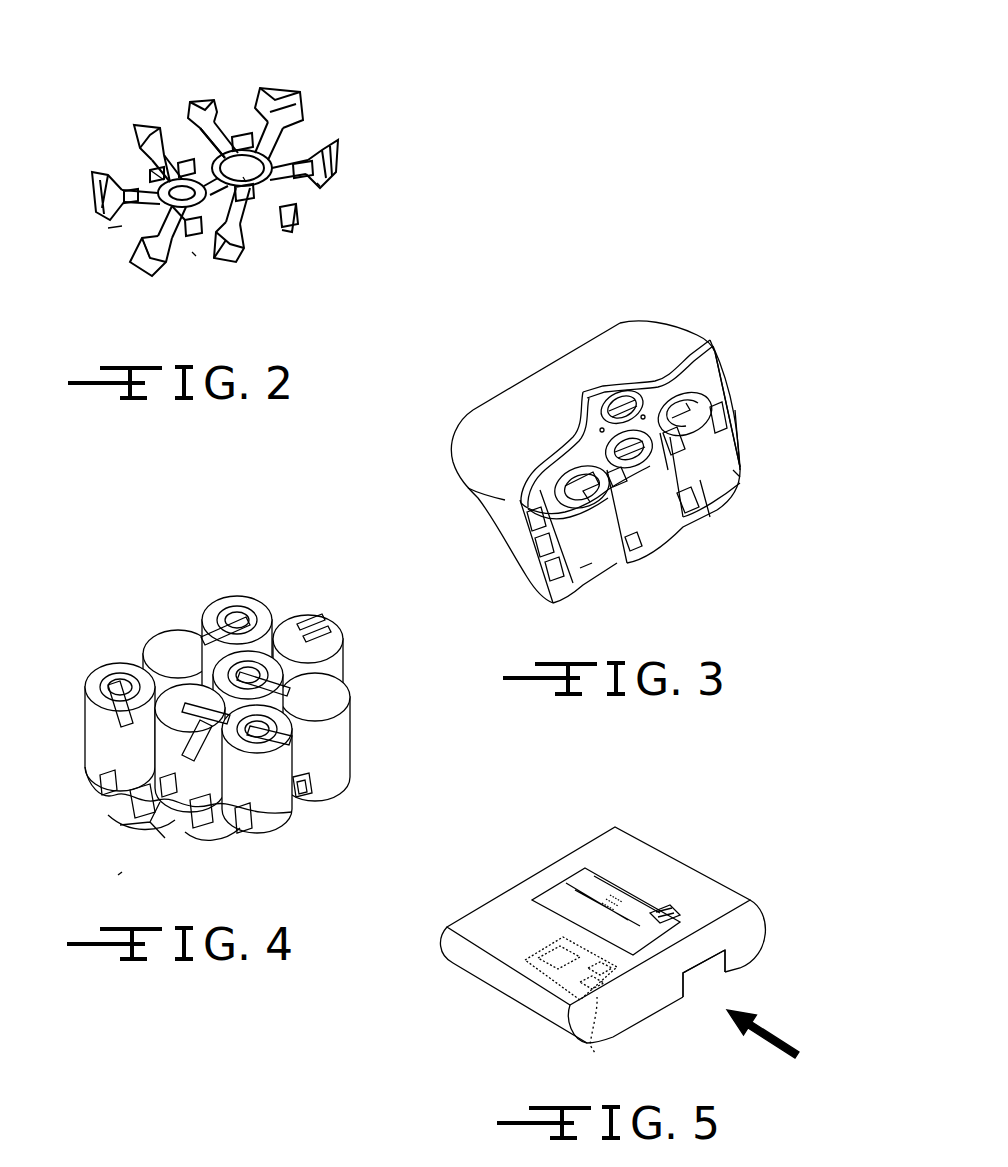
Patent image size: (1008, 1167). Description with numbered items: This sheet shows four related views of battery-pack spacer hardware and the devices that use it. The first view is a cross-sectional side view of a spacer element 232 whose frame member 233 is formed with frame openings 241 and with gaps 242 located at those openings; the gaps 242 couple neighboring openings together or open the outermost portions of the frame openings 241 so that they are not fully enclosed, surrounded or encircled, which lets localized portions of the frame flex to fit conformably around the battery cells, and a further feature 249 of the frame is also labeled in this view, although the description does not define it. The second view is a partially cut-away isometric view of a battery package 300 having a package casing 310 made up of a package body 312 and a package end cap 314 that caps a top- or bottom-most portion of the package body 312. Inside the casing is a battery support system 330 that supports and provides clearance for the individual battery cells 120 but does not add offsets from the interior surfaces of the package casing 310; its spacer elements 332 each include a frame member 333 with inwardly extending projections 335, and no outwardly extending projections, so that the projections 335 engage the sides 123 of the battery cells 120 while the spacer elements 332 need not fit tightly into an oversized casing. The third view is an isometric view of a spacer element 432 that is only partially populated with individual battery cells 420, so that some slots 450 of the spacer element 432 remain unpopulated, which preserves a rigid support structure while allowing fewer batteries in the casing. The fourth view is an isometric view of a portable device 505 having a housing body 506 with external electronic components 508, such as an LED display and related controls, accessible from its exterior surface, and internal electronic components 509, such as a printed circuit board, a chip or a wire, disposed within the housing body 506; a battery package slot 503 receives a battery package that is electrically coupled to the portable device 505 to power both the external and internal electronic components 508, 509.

In FIG. 2, the spacer element 232 is at (140, 96).
In FIG. 2, the gaps 242 is at (150, 185).
In FIG. 2, the frame openings 241 is at (122, 227).
In FIG. 2, the central aperture 249 is at (243, 177).
In FIG. 2, the frame member 233 is at (317, 183).
In FIG. 3, the battery package 300 is at (514, 360).
In FIG. 3, the package end cap 314 is at (620, 363).
In FIG. 3, the battery support system 330 is at (707, 353).
In FIG. 3, the spacer elements 332 is at (731, 372).
In FIG. 3, the sides 123 is at (720, 420).
In FIG. 3, the projections 335 is at (582, 444).
In FIG. 3, the package casing 310 is at (445, 503).
In FIG. 3, the frame member 333 is at (520, 500).
In FIG. 3, the package body 312 is at (490, 533).
In FIG. 3, the battery cells 120 is at (660, 505).
In FIG. 4, the battery cells 420 is at (265, 797).
In FIG. 4, the slots 450 is at (123, 817).
In FIG. 4, the spacer element 432 is at (118, 876).
In FIG. 5, the portable device 505 is at (664, 838).
In FIG. 5, the housing body 506 is at (480, 905).
In FIG. 5, the external electronic components 508 is at (646, 907).
In FIG. 5, the internal electronic components 509 is at (585, 1004).
In FIG. 5, the battery package slot 503 is at (714, 984).